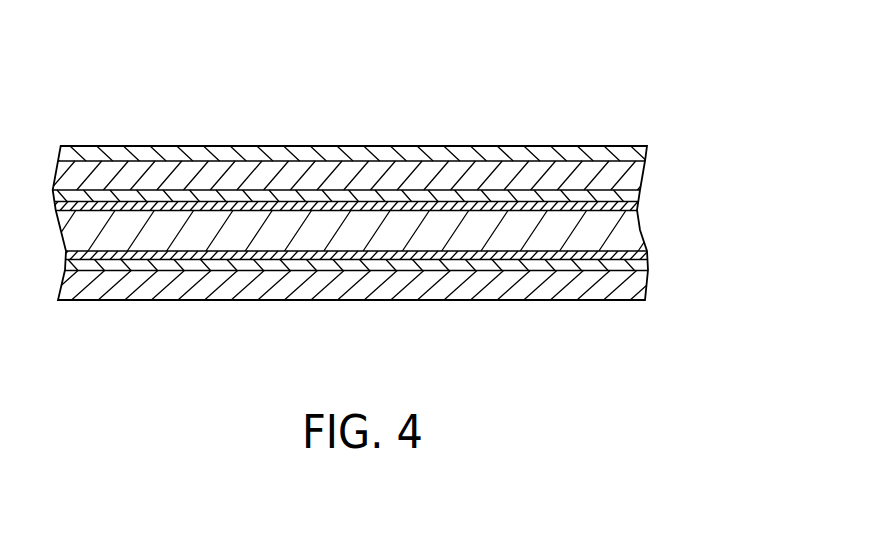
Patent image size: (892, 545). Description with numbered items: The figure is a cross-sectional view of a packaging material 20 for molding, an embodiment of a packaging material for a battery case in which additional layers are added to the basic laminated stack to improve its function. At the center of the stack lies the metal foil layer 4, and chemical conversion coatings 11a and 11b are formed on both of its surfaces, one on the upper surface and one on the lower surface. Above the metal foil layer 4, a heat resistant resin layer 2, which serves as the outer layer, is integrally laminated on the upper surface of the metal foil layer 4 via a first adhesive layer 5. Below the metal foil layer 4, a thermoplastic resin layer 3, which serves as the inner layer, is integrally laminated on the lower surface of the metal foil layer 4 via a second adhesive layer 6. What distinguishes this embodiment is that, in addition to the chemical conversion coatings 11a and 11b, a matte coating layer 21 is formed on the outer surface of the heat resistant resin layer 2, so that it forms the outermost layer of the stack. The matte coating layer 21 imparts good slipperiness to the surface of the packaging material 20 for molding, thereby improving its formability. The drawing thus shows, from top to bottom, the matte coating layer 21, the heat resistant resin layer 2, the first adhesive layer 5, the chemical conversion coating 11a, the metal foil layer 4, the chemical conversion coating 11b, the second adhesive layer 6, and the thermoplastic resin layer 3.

The packaging material for molding 20 is at (562, 110).
The matte coating layer 21 is at (622, 155).
The heat resistant resin layer 2 is at (632, 173).
The first adhesive layer 5 is at (642, 192).
The chemical conversion coating 11a is at (638, 205).
The metal foil layer 4 is at (627, 233).
The chemical conversion coating 11b is at (642, 255).
The second adhesive layer 6 is at (635, 266).
The thermoplastic resin layer 3 is at (628, 285).